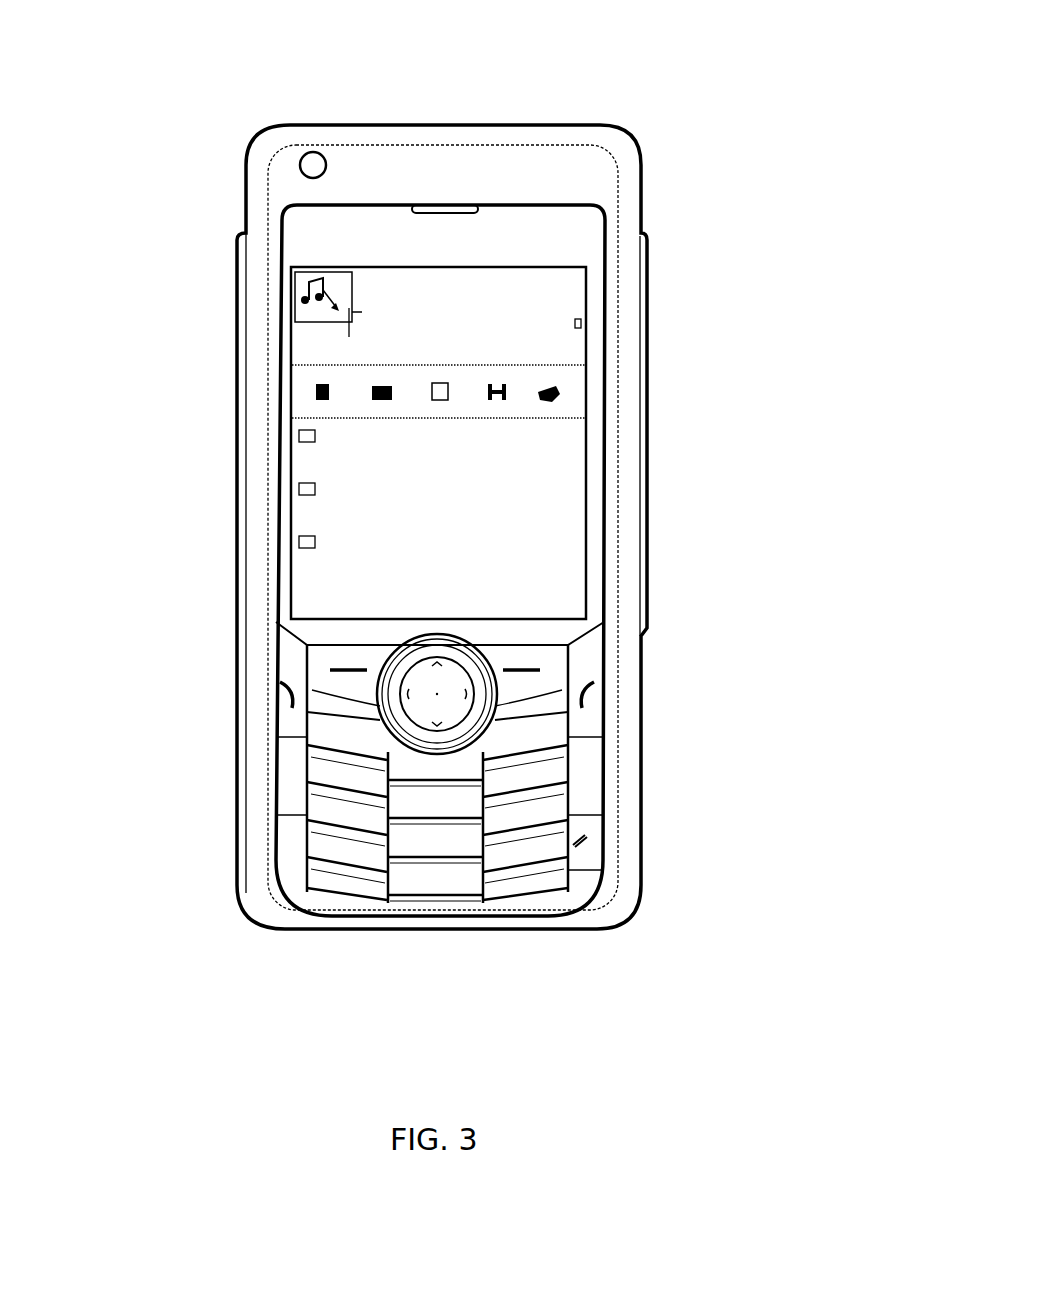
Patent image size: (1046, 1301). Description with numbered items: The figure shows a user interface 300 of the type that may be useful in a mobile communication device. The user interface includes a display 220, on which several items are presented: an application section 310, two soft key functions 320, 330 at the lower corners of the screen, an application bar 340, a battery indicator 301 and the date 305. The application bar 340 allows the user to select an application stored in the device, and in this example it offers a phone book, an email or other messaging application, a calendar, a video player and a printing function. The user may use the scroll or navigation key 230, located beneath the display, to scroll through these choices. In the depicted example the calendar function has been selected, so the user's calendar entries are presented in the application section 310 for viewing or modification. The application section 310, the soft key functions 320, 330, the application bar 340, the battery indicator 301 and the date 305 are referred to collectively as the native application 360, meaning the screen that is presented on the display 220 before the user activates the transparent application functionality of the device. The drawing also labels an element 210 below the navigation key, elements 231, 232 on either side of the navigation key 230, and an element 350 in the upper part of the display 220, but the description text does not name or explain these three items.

The keypad 210 is at (535, 884).
The display 220 is at (553, 285).
The scroll or navigation key 230 is at (427, 708).
The left soft key 231 is at (318, 680).
The right soft key 232 is at (545, 675).
The user interface 300 is at (635, 359).
The battery indicator 301 is at (580, 320).
The date 305 is at (465, 322).
The application section 310 is at (565, 527).
The soft key function 320 is at (572, 602).
The soft key function 330 is at (290, 600).
The application bar 340 is at (308, 387).
The music player indicator 350 is at (303, 283).
The native application 360 is at (560, 472).